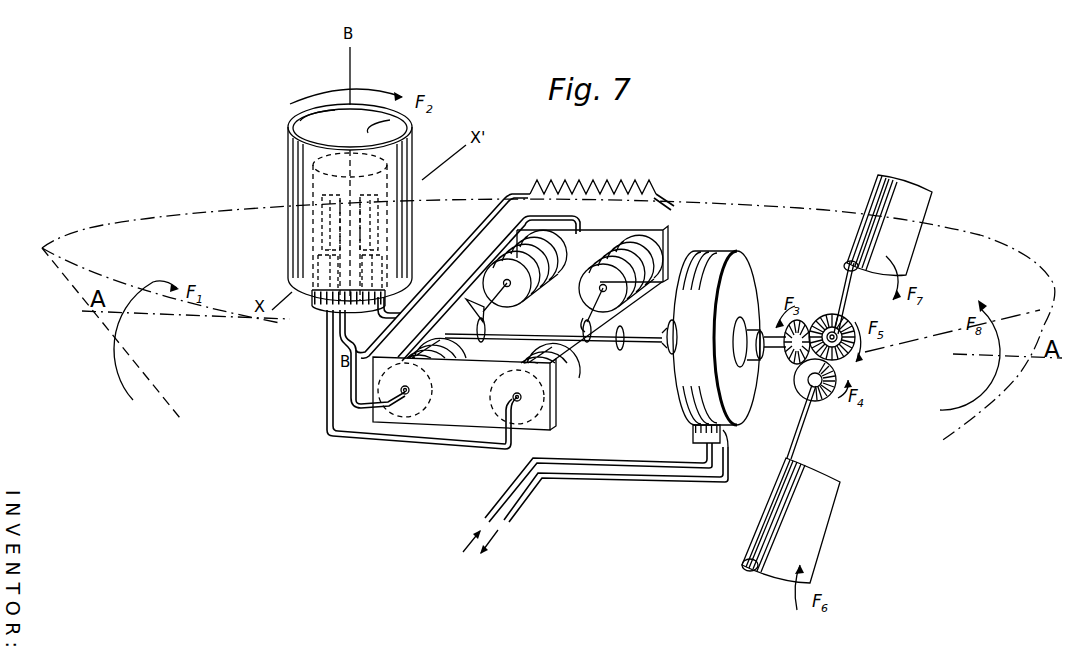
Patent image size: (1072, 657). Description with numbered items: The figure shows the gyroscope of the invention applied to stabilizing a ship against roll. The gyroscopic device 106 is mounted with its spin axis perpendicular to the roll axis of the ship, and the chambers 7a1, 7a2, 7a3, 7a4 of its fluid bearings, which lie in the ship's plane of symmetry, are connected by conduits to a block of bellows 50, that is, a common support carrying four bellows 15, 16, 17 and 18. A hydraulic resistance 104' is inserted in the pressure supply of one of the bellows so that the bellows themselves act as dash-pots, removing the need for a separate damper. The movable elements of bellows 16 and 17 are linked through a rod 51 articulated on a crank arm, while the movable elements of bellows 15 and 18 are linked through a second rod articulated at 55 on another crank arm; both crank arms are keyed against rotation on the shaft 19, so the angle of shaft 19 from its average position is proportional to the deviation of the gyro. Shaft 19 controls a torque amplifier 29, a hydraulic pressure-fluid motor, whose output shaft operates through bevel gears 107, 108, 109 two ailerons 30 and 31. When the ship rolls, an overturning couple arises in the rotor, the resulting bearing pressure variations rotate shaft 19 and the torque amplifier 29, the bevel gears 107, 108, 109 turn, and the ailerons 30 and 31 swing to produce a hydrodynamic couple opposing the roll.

The gyroscopic device 106 is at (290, 175).
The chamber 7a1 is at (330, 248).
The chamber 7a2 is at (378, 212).
The chamber 7a3 is at (322, 212).
The chamber 7a4 is at (387, 262).
The hydraulic resistance 104' is at (593, 172).
The rod 51 is at (479, 310).
The bellows 17 is at (528, 292).
The bellows 18 is at (635, 305).
The articulation 55 is at (580, 325).
The shaft 19 is at (640, 344).
The common support 50 is at (580, 378).
The torque amplifier 29 is at (680, 410).
The bellows 16 is at (425, 392).
The bellows 15 is at (503, 405).
The bevel gear 109 is at (836, 312).
The bevel gear 107 is at (798, 365).
The bevel gear 108 is at (836, 404).
The aileron 31 is at (918, 246).
The aileron 30 is at (822, 538).